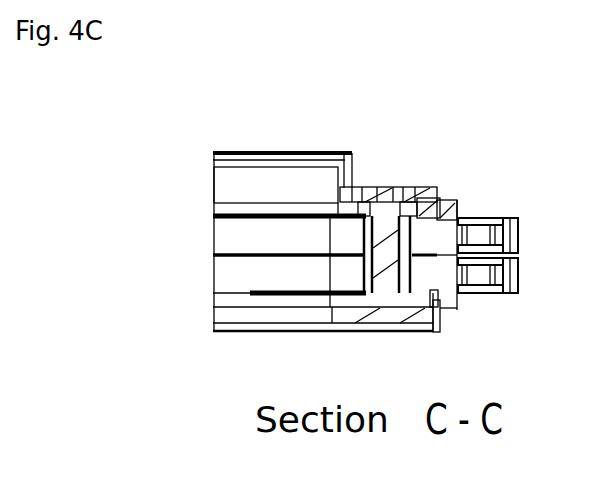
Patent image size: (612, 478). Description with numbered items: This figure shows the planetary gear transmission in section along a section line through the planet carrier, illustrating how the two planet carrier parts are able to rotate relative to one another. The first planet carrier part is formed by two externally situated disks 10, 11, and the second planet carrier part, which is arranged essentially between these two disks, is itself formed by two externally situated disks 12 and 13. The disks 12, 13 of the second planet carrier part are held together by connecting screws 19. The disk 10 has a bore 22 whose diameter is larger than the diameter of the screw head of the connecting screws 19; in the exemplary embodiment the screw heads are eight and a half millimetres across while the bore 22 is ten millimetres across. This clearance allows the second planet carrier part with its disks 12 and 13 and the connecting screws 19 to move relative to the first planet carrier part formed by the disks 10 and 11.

The externally situated disk 10 is at (418, 186).
The externally situated disk 11 is at (343, 310).
The externally situated disk 12 is at (440, 210).
The externally situated disk 13 is at (410, 302).
The connecting screw 19 is at (380, 218).
The bore 22 is at (440, 198).